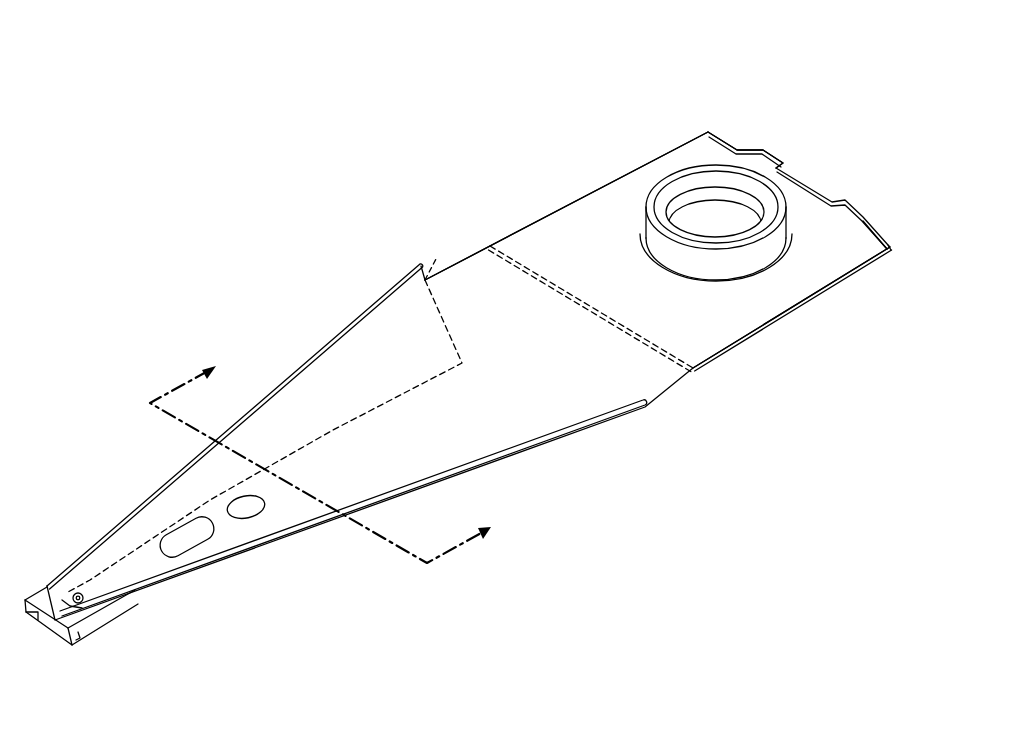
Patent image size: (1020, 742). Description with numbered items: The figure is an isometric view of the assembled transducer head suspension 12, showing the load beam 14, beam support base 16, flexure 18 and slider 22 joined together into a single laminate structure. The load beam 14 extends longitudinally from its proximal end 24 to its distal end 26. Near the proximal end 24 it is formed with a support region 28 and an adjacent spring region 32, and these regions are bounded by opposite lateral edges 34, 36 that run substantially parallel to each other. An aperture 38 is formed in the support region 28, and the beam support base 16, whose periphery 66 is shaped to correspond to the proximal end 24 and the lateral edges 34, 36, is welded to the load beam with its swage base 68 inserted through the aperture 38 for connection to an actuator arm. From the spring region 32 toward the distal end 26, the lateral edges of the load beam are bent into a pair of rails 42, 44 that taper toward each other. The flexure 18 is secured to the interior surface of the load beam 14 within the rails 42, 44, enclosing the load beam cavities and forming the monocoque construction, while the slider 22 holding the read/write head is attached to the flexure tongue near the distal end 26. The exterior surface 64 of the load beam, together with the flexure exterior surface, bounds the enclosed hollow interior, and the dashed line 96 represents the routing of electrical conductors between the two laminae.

The transducer head suspension 12 is at (423, 110).
The load beam 14 is at (407, 330).
The beam support base 16 is at (796, 230).
The flexure 18 is at (143, 602).
The slider 22 is at (110, 622).
The proximal end 24 is at (782, 170).
The distal end 26 is at (45, 622).
The support region 28 is at (802, 292).
The spring region 32 is at (700, 370).
The lateral edge 34 is at (787, 313).
The lateral edge 36 is at (613, 180).
The aperture 38 is at (636, 224).
The bent rail 42 is at (565, 432).
The bent rail 44 is at (340, 330).
The exterior surface 64 is at (313, 472).
The periphery 66 is at (873, 260).
The swage base 68 is at (675, 177).
The dashed line 96 is at (213, 492).